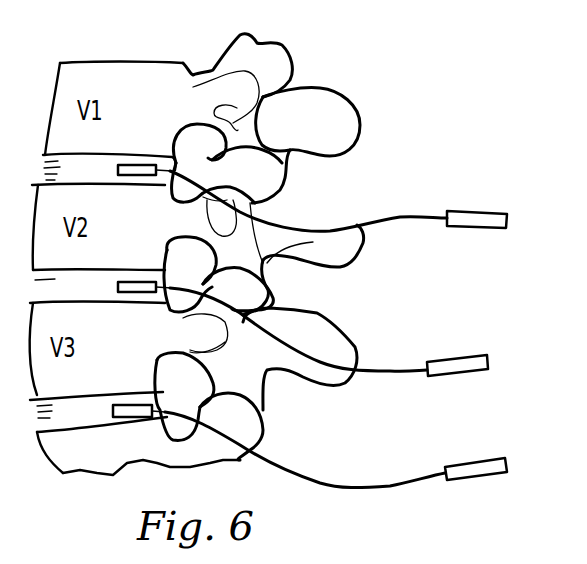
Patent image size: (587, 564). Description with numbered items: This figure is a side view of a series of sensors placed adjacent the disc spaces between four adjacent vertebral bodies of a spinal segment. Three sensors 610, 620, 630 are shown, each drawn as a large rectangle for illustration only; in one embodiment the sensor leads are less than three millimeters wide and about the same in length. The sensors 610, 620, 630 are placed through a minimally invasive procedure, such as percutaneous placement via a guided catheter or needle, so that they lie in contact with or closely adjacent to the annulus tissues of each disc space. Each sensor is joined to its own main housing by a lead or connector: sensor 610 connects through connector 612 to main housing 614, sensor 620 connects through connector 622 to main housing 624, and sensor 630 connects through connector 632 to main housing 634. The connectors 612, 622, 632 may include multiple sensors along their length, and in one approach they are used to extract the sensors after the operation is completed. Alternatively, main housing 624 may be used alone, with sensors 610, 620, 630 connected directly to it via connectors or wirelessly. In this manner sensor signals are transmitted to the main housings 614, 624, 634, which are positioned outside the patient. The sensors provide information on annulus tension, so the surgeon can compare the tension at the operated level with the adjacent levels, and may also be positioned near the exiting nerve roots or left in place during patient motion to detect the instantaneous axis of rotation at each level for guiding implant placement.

The sensor 610 is at (140, 165).
The lead or connector 612 is at (405, 216).
The main housing 614 is at (483, 211).
The sensor 620 is at (137, 282).
The lead or connector 622 is at (384, 378).
The main housing 624 is at (463, 377).
The sensor 630 is at (125, 405).
The lead or connector 632 is at (360, 490).
The main housing 634 is at (480, 480).